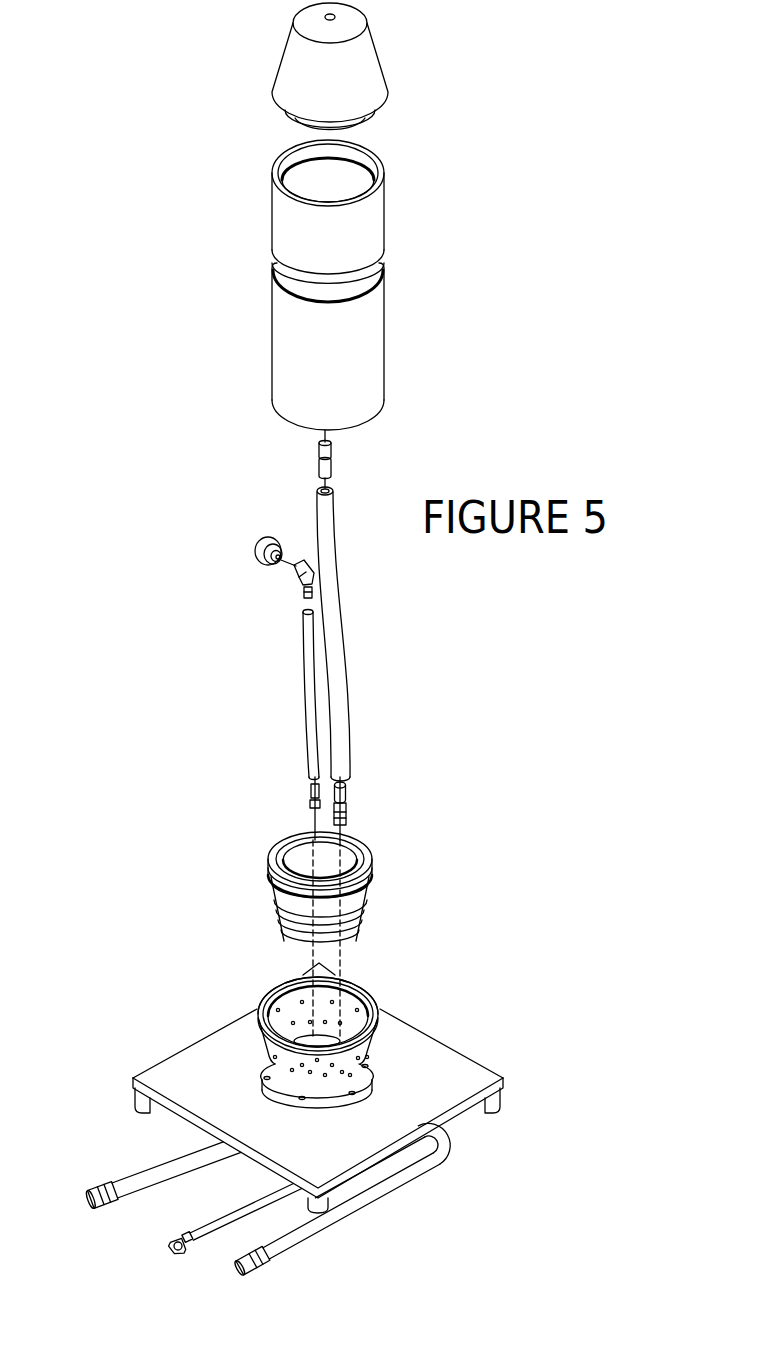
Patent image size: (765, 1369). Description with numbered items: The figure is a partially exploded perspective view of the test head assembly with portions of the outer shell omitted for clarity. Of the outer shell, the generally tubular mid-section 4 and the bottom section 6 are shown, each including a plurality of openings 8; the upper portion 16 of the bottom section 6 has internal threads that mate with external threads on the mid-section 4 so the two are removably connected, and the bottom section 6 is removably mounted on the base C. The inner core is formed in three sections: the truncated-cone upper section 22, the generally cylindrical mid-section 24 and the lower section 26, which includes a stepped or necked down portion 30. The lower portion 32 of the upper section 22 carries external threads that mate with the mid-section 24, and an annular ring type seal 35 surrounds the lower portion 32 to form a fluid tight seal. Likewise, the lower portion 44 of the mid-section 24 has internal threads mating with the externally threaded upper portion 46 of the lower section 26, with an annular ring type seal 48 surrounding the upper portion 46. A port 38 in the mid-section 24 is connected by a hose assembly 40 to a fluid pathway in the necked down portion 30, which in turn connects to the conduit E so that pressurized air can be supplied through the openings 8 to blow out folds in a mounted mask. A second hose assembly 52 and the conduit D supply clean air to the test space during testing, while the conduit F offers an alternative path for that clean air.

The upper section 22 is at (378, 53).
The lower portion 32 is at (286, 123).
The annular ring type seal 35 is at (376, 122).
The mid-section 4 is at (271, 166).
The mid-section 24 is at (385, 306).
The lower portion 44 is at (293, 427).
The hose assembly 52 is at (350, 448).
The port 38 is at (256, 553).
The hose assembly 40 is at (283, 573).
The upper portion 46 is at (360, 840).
The lower section 26 is at (373, 902).
The annular ring type seal 48 is at (276, 893).
The stepped or necked down portion 30 is at (283, 932).
The bottom section 6 is at (372, 1032).
The upper portion 16 is at (262, 980).
The openings 8 is at (357, 1006).
The base C is at (472, 1052).
The conduit F is at (112, 1178).
The conduit E is at (163, 1251).
The conduit D is at (287, 1265).